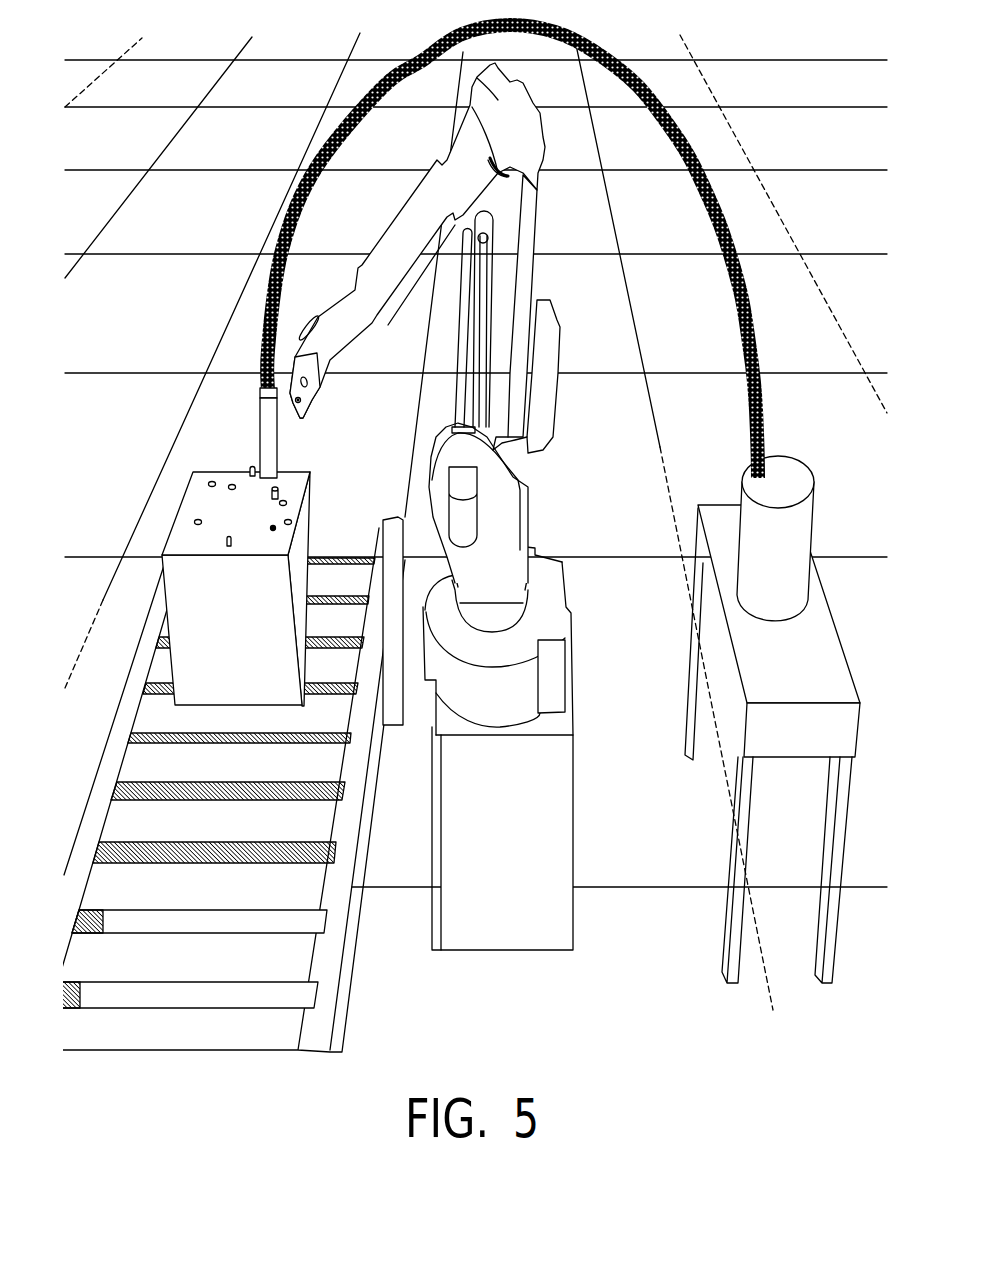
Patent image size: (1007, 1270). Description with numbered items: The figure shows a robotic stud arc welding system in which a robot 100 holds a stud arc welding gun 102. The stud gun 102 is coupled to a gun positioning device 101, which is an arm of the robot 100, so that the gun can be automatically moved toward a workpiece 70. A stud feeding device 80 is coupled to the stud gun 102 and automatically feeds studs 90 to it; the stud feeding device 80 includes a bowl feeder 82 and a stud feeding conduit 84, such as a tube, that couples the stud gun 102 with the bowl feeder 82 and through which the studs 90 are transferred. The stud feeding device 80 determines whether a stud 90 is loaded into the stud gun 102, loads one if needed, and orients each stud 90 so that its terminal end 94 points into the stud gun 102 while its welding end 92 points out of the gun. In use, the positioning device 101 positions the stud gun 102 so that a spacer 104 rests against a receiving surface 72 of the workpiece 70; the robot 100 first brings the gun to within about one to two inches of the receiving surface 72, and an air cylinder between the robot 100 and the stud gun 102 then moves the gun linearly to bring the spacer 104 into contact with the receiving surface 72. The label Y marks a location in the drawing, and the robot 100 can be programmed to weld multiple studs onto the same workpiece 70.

The workpiece 70 is at (195, 589).
The receiving surface 72 is at (177, 543).
The stud feeding device 80 is at (808, 445).
The bowl feeder 82 is at (812, 500).
The stud feeding conduit 84 is at (752, 346).
The stud 90 is at (187, 428).
The welding end 92 is at (252, 467).
The terminal end 94 is at (250, 470).
The robot 100 is at (461, 506).
The gun positioning device 101 is at (399, 226).
The stud arc welding gun 102 is at (265, 403).
The spacer 104 is at (270, 495).
The wrist Y is at (307, 419).